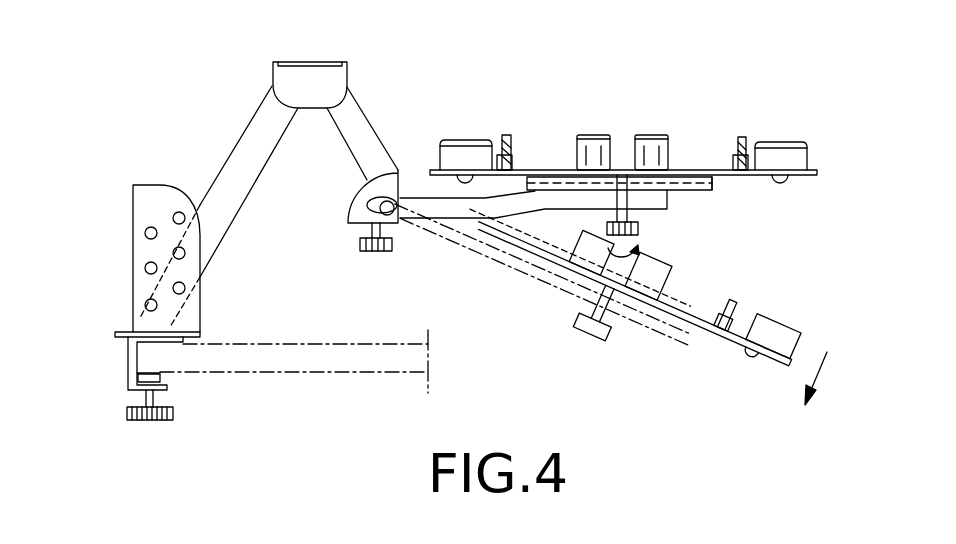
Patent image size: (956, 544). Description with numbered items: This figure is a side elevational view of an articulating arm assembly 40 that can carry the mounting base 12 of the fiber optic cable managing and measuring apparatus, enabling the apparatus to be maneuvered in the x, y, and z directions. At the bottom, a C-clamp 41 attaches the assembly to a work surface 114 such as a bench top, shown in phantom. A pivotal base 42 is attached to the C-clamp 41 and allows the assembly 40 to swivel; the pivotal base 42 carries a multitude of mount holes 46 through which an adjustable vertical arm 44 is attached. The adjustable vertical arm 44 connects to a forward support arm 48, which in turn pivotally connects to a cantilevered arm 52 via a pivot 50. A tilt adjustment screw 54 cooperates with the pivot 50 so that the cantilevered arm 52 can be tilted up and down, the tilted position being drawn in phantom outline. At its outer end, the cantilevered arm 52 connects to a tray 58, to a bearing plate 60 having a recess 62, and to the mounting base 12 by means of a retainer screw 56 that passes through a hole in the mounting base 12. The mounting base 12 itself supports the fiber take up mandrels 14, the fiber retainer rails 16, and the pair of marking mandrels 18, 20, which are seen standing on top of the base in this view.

The mounting base 12 is at (810, 176).
The fiber take up mandrels 14 is at (473, 152).
The fiber retainer rails 16 is at (506, 131).
The marking mandrel 18 is at (595, 143).
The marking mandrel 20 is at (657, 143).
The articulating arm assembly 40 is at (245, 73).
The C-clamp 41 is at (163, 383).
The pivotal base 42 is at (118, 332).
The adjustable vertical arm 44 is at (252, 142).
The mount holes 46 is at (145, 233).
The forward support arm 48 is at (353, 118).
The pivot 50 is at (396, 212).
The cantilevered arm 52 is at (470, 210).
The tilt adjustment screw 54 is at (360, 243).
The retainer screw 56 is at (638, 230).
The tray 58 is at (712, 190).
The bearing plate 60 is at (683, 172).
The recess 62 is at (683, 170).
The work surface 114 is at (343, 360).